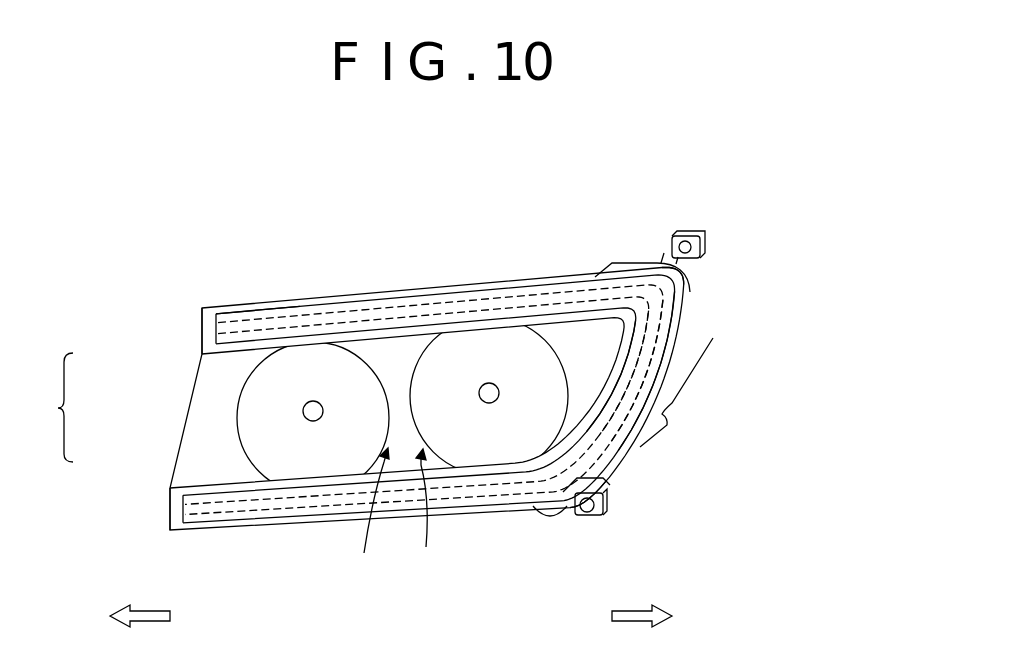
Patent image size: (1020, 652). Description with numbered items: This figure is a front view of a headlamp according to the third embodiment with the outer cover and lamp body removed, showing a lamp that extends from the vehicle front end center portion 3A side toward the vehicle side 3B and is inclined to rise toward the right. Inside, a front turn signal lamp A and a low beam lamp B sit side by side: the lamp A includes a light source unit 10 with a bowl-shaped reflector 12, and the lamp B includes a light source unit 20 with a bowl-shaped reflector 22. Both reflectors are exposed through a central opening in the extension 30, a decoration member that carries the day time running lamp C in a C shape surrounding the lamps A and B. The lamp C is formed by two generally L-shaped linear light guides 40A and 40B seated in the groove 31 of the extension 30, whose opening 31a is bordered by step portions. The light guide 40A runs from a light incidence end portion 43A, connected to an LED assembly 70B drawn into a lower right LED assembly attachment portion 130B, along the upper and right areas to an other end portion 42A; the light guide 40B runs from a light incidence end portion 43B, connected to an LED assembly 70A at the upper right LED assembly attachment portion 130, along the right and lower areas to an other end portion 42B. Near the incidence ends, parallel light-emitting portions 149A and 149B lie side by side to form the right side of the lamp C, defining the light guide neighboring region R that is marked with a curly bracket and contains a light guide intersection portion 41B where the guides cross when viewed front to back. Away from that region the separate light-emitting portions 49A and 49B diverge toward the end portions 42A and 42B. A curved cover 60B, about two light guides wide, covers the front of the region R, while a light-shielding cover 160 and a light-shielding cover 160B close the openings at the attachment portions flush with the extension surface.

The light source unit 10 is at (297, 462).
The reflector 12 is at (313, 470).
The light source unit 20 is at (477, 447).
The reflector 22 is at (489, 454).
The extension 30 is at (188, 420).
The groove 31 is at (278, 318).
The opening of the groove 31a is at (264, 272).
The linear light guide 40A is at (238, 331).
The linear light guide 40B is at (218, 502).
The light guide intersection portion 41B is at (688, 320).
The other end portion 42A is at (203, 325).
The other end portion 42B is at (170, 505).
The light incidence end portion 43A is at (597, 481).
The light incidence end portion 43B is at (685, 298).
The separate light-emitting portion 49A is at (361, 313).
The separate light-emitting portion 49B is at (330, 472).
The curved cover 60B is at (525, 290).
The LED assembly 70A is at (705, 245).
The LED assembly 70B is at (608, 506).
The LED assembly attachment portion 130 is at (672, 300).
The LED assembly attachment portion 130B is at (548, 515).
The parallel light-emitting portion 149A is at (648, 355).
The parallel light-emitting portion 149B is at (660, 335).
The light-shielding cover 160 is at (645, 272).
The light-shielding cover 160B is at (565, 512).
The light guide neighboring region R is at (676, 395).
The front turn signal lamp A is at (372, 515).
The low beam lamp B is at (424, 512).
The day time running lamp C is at (55, 407).
The vehicle front end center portion 3A is at (140, 627).
The vehicle side 3B is at (642, 627).